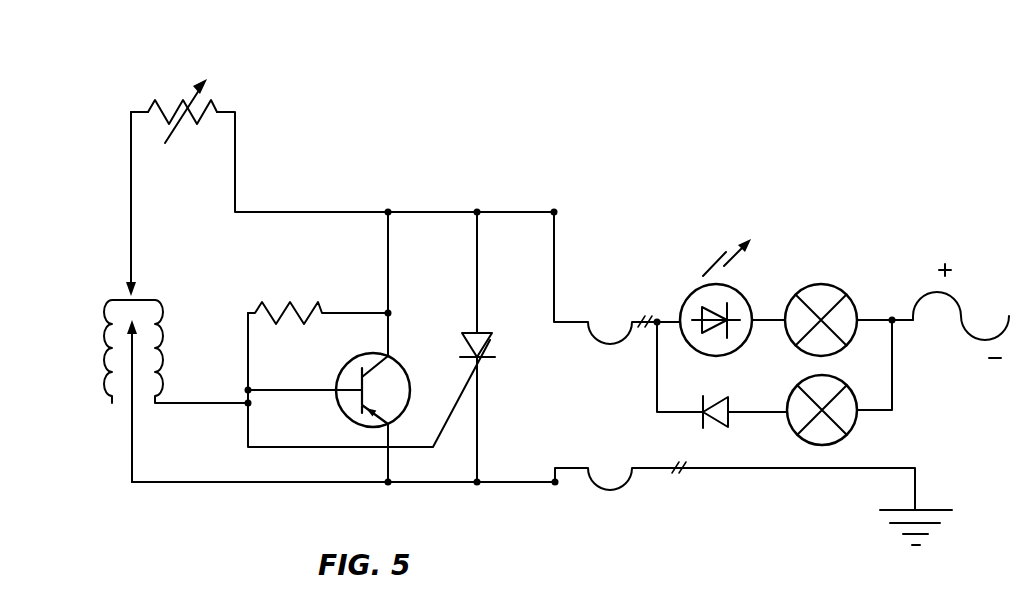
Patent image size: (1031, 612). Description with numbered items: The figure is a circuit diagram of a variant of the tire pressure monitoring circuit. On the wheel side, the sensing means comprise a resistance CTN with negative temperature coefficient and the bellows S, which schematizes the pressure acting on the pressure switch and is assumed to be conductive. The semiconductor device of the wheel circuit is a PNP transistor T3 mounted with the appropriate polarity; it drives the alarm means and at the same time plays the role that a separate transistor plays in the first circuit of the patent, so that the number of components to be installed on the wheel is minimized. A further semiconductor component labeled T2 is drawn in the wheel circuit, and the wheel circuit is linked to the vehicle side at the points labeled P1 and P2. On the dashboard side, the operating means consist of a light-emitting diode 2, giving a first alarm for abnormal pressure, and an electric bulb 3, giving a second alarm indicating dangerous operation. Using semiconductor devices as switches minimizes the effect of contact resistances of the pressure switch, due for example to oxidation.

The resistance with negative temperature coefficient CTN is at (185, 91).
The bellows S is at (105, 355).
The PNP transistor T3 is at (395, 362).
The triac T2 is at (497, 345).
The terminal P1 is at (554, 210).
The terminal P2 is at (555, 484).
The light-emitting diode 2 is at (720, 297).
The electric bulb 3 is at (826, 287).